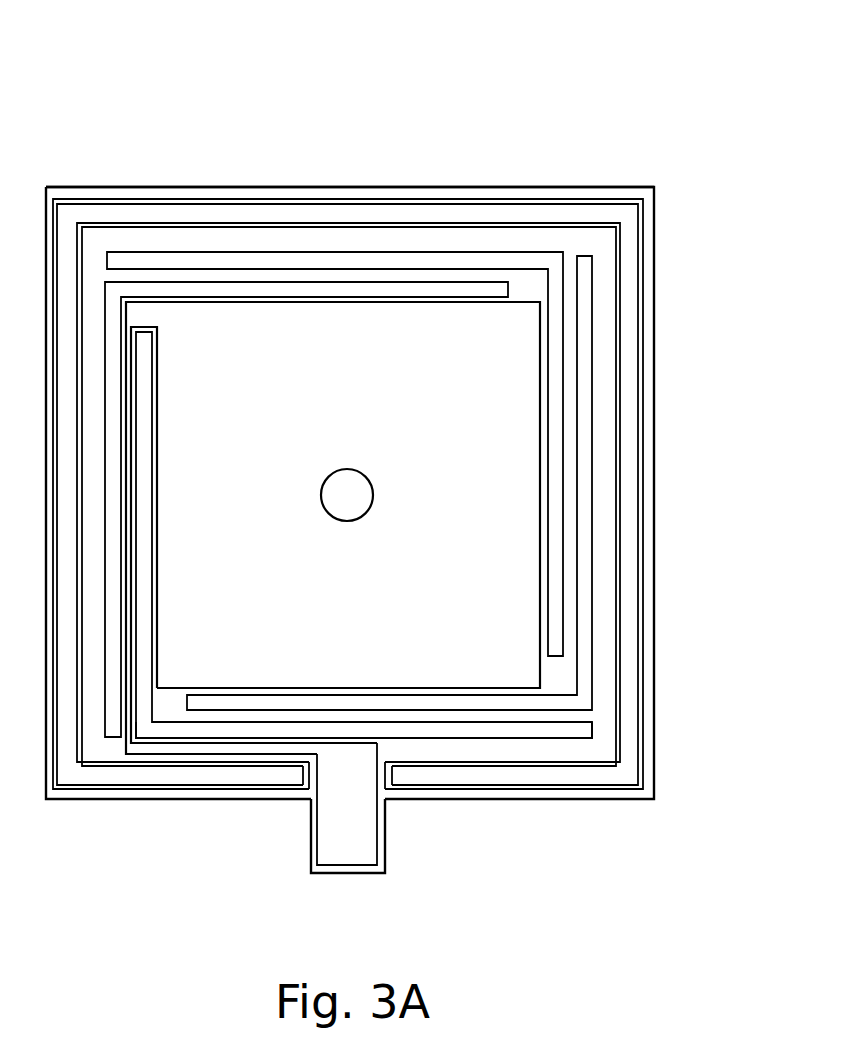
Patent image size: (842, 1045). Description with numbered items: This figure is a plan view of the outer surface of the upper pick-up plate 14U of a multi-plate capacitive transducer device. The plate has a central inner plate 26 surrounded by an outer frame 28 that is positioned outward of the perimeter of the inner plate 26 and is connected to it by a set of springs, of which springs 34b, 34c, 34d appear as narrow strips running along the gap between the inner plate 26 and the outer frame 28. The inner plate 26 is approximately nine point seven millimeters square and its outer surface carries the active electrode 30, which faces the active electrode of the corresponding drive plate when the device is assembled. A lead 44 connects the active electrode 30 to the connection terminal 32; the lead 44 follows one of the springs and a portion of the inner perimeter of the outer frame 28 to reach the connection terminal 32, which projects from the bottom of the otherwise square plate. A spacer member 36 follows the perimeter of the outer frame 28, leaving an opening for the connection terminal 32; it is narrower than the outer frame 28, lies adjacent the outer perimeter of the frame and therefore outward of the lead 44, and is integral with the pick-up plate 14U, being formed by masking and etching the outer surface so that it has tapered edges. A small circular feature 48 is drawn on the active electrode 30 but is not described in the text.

The upper pick-up plate 14U is at (140, 112).
The inner plate 26 is at (465, 295).
The outer frame 28 is at (293, 187).
The active electrode 30 is at (477, 506).
The connection terminal 32 is at (340, 843).
The spring 34b is at (280, 720).
The spring 34c is at (568, 625).
The spring 34d is at (283, 275).
The spacer member 36 is at (585, 215).
The lead 44 is at (125, 446).
The via 48 is at (332, 510).